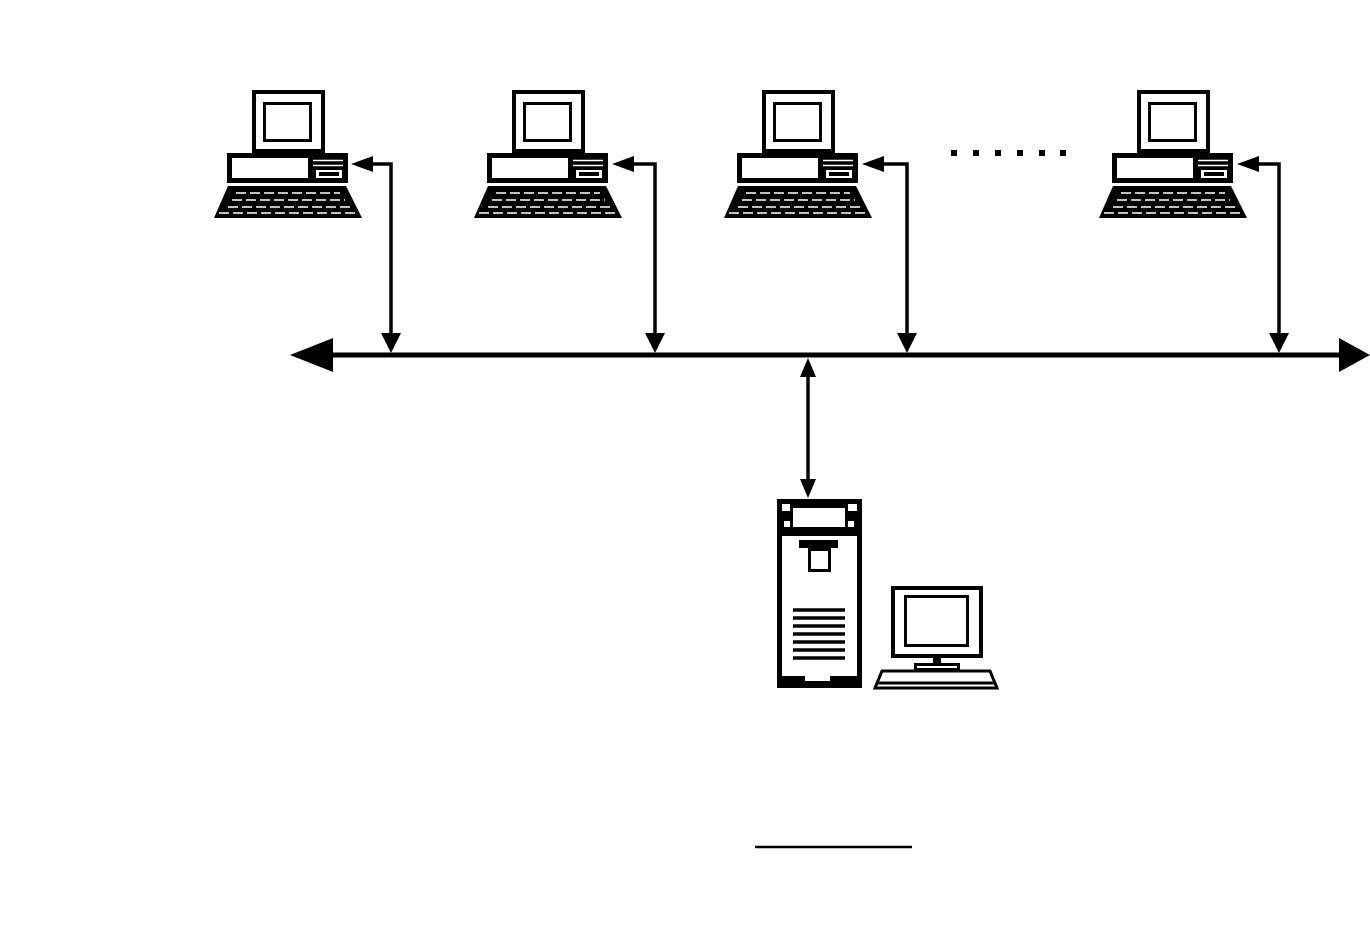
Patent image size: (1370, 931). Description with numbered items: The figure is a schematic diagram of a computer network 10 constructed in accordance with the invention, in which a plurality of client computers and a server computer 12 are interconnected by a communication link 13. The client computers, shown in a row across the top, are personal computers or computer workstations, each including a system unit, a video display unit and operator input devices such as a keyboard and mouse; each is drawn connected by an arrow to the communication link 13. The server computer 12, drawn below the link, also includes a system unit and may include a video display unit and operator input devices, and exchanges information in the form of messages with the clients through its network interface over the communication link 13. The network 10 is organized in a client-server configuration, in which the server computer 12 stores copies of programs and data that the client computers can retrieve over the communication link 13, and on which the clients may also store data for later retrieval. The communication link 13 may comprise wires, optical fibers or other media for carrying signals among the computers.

The computer network 10 is at (312, 661).
The server computer 12 is at (777, 630).
The communication link 13 is at (1101, 350).